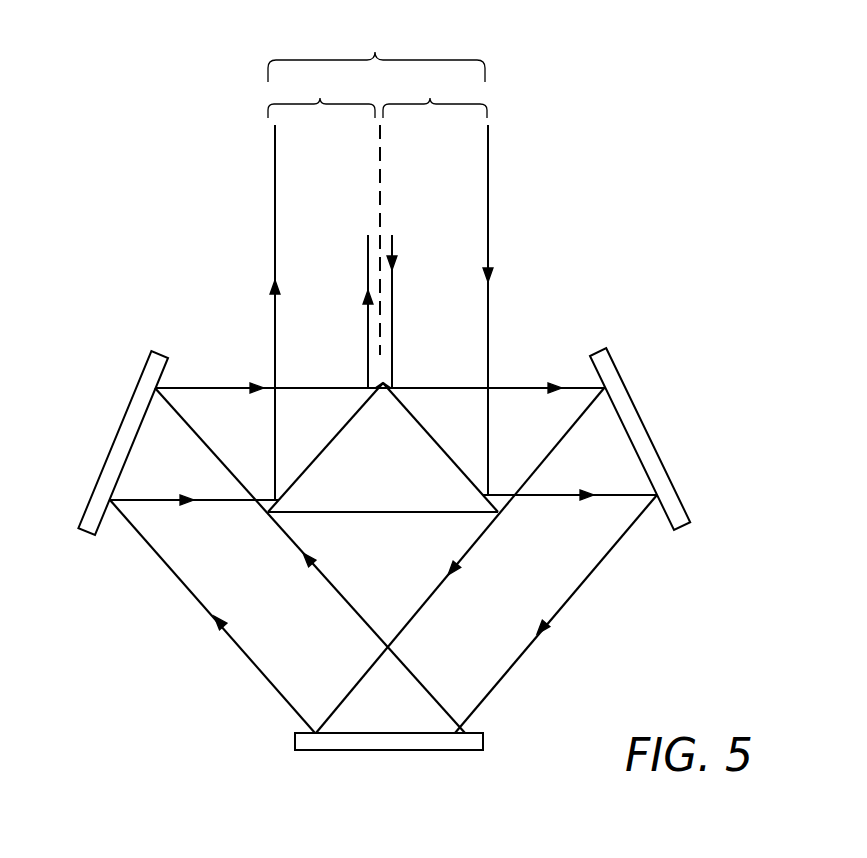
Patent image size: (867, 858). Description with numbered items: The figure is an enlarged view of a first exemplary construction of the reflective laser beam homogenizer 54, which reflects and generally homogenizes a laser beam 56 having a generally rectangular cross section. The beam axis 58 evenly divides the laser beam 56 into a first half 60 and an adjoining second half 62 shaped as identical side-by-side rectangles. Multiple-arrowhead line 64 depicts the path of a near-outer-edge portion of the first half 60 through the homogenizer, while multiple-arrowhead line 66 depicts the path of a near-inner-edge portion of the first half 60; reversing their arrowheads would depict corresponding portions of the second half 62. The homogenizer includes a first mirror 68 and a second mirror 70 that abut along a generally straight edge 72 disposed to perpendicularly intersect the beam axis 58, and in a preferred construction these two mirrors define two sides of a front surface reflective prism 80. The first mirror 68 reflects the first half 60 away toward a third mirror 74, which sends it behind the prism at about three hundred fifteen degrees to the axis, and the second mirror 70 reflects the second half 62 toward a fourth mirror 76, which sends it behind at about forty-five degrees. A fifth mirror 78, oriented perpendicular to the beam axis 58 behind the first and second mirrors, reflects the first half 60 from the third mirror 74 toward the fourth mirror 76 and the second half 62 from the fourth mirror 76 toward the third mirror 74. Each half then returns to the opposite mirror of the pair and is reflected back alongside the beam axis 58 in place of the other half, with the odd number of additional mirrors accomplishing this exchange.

The reflective laser beam homogenizer 54 is at (618, 150).
The laser beam 56 is at (376, 53).
The beam axis 58 is at (381, 172).
The first half of the laser beam 60 is at (321, 287).
The second half of the laser beam 62 is at (435, 96).
The multiple-arrowhead line 64 is at (488, 177).
The multiple-arrowhead line 66 is at (393, 305).
The first mirror 68 is at (410, 413).
The second mirror 70 is at (359, 410).
The straight edge 72 is at (380, 383).
The third mirror 74 is at (644, 458).
The fourth mirror 76 is at (120, 470).
The fifth mirror 78 is at (366, 752).
The front surface reflective prism 80 is at (393, 490).